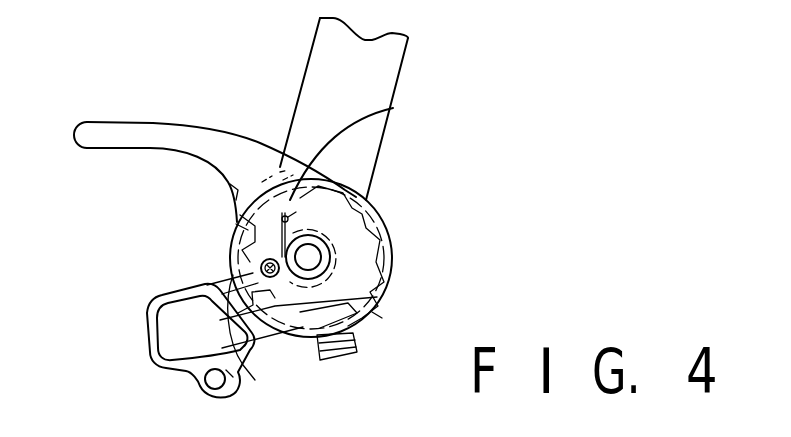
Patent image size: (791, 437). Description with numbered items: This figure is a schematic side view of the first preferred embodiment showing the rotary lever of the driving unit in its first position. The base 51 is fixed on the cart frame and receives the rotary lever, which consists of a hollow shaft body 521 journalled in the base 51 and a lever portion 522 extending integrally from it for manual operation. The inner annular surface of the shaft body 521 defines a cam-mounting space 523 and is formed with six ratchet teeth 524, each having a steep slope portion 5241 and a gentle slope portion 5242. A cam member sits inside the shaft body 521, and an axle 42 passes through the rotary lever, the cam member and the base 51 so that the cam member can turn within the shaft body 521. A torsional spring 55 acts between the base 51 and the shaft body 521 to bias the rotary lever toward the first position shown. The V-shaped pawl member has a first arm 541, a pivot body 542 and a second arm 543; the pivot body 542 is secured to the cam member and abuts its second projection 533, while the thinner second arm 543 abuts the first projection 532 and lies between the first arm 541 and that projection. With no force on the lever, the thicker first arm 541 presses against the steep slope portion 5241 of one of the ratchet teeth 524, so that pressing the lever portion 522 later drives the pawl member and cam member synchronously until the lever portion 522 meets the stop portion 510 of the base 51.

The axle 42 is at (302, 197).
The base 51 is at (140, 341).
The torsional spring 55 is at (390, 217).
The stop portion 510 is at (150, 307).
The hollow shaft body 521 is at (390, 253).
The lever portion 522 is at (170, 128).
The cam-mounting space 523 is at (368, 262).
The ratchet teeth 524 is at (231, 218).
The first projection 532 is at (353, 142).
The second projection 533 is at (272, 322).
The first arm 541 is at (258, 268).
The pivot body 542 is at (250, 374).
The second arm 543 is at (259, 210).
The steep slope portion 5241 is at (240, 243).
The gentle slope portion 5242 is at (229, 186).